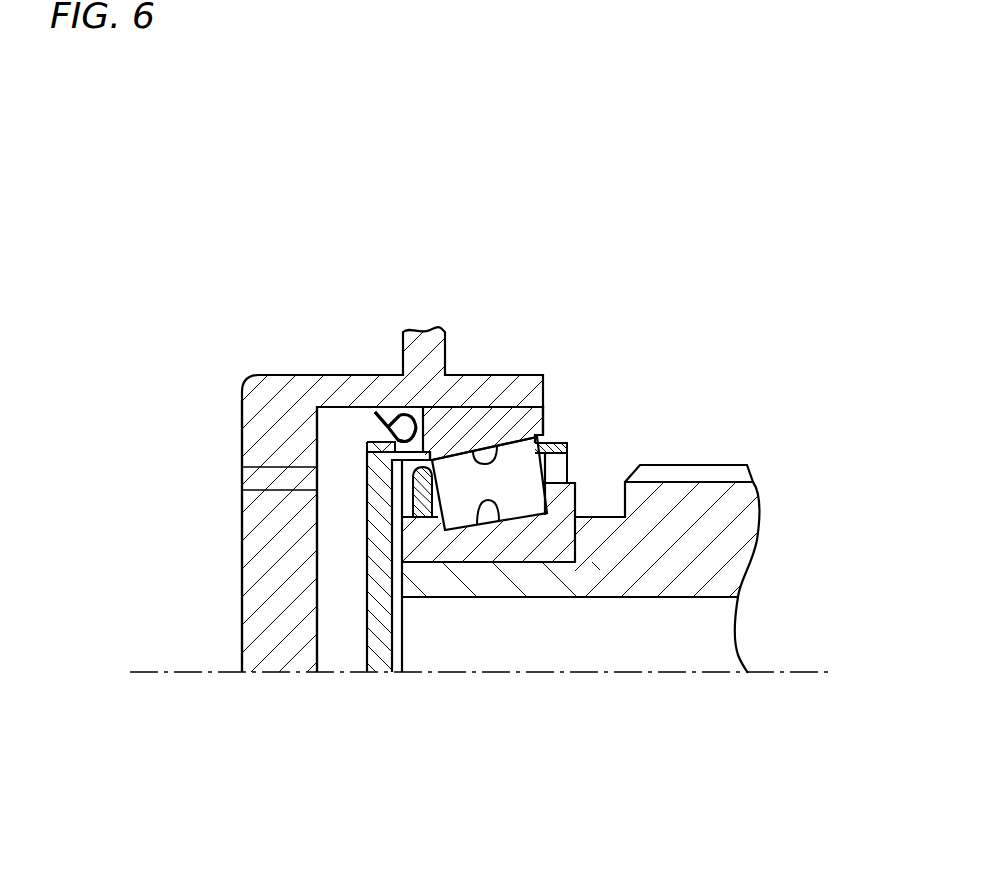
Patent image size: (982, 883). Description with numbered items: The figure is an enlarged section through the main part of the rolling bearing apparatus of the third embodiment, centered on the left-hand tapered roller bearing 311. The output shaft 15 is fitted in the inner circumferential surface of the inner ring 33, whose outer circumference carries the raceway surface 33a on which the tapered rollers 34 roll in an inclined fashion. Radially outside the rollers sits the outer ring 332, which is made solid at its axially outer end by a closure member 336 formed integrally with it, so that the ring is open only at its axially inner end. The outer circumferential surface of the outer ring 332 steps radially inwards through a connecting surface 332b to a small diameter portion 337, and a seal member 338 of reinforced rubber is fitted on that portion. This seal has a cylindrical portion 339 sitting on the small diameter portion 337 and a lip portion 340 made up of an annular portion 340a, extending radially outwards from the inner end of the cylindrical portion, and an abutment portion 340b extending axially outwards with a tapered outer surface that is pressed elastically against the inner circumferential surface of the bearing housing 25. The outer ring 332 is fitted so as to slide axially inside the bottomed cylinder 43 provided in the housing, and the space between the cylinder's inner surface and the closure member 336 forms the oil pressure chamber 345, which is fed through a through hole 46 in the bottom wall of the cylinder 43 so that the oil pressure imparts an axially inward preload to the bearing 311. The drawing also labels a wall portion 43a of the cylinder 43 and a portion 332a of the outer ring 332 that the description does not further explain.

The output shaft 15 is at (720, 538).
The bearing housing 25 is at (297, 371).
The inner ring 33 is at (558, 547).
The raceway surface 33a is at (497, 535).
The tapered rollers 34 is at (520, 463).
The cylinder 43 is at (253, 372).
The housing side wall 43a is at (253, 590).
The through hole 46 is at (318, 462).
The tapered roller bearing 311 is at (573, 382).
The outer ring 332 is at (527, 423).
The outer race raceway 332a is at (487, 460).
The connecting surface 332b is at (421, 430).
The closure member 336 is at (367, 610).
The small diameter portion 337 is at (385, 440).
The seal member 338 is at (366, 424).
The cylindrical portion 339 is at (255, 490).
The lip portion 340 is at (381, 398).
The annular portion 340a is at (415, 441).
The abutment portion 340b is at (380, 405).
The oil pressure chamber 345 is at (358, 657).